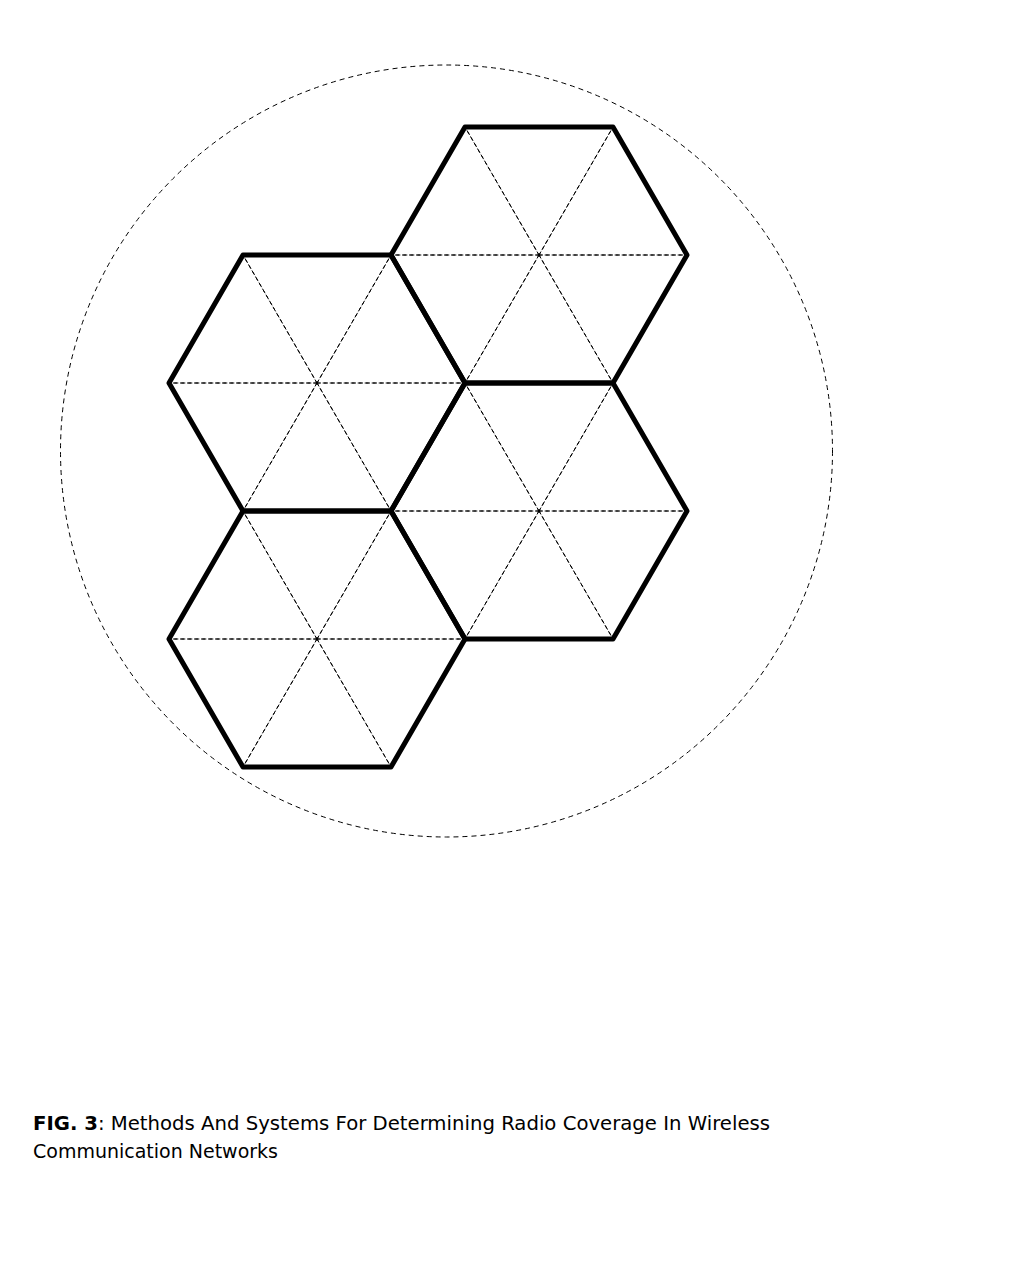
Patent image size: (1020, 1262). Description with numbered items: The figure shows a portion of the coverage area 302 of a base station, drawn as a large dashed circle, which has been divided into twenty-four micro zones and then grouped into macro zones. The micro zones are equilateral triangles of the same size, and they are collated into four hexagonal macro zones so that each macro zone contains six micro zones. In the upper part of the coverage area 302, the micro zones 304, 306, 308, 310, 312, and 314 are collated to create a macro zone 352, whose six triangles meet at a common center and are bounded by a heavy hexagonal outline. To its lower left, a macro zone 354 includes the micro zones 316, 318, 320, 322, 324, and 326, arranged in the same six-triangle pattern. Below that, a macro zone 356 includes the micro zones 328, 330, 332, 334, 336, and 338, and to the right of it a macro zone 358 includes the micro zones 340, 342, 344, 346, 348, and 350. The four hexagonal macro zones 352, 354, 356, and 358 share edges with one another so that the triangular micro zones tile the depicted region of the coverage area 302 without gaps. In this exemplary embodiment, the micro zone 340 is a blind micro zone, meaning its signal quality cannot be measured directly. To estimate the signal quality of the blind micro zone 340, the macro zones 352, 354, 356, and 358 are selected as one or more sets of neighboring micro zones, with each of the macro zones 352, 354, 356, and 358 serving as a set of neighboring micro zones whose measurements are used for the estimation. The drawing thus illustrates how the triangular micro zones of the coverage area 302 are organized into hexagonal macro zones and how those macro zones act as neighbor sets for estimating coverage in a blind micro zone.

The coverage area 302 is at (447, 420).
The micro zone 304 is at (525, 178).
The micro zone 306 is at (592, 229).
The micro zone 308 is at (598, 304).
The micro zone 310 is at (530, 349).
The micro zone 312 is at (458, 304).
The micro zone 314 is at (458, 225).
The micro zone 316 is at (370, 357).
The micro zone 318 is at (376, 432).
The micro zone 320 is at (308, 477).
The micro zone 322 is at (236, 432).
The micro zone 324 is at (236, 353).
The micro zone 326 is at (303, 306).
The micro zone 328 is at (376, 609).
The micro zone 330 is at (376, 688).
The micro zone 332 is at (315, 737).
The micro zone 334 is at (238, 688).
The micro zone 336 is at (236, 609).
The micro zone 338 is at (303, 562).
The blind micro zone 340 is at (458, 481).
The micro zone 342 is at (525, 434).
The micro zone 344 is at (592, 485).
The micro zone 346 is at (598, 560).
The micro zone 348 is at (530, 605).
The micro zone 350 is at (458, 560).
The macro zone 352 is at (538, 230).
The macro zone 354 is at (317, 353).
The macro zone 356 is at (307, 637).
The macro zone 358 is at (544, 504).